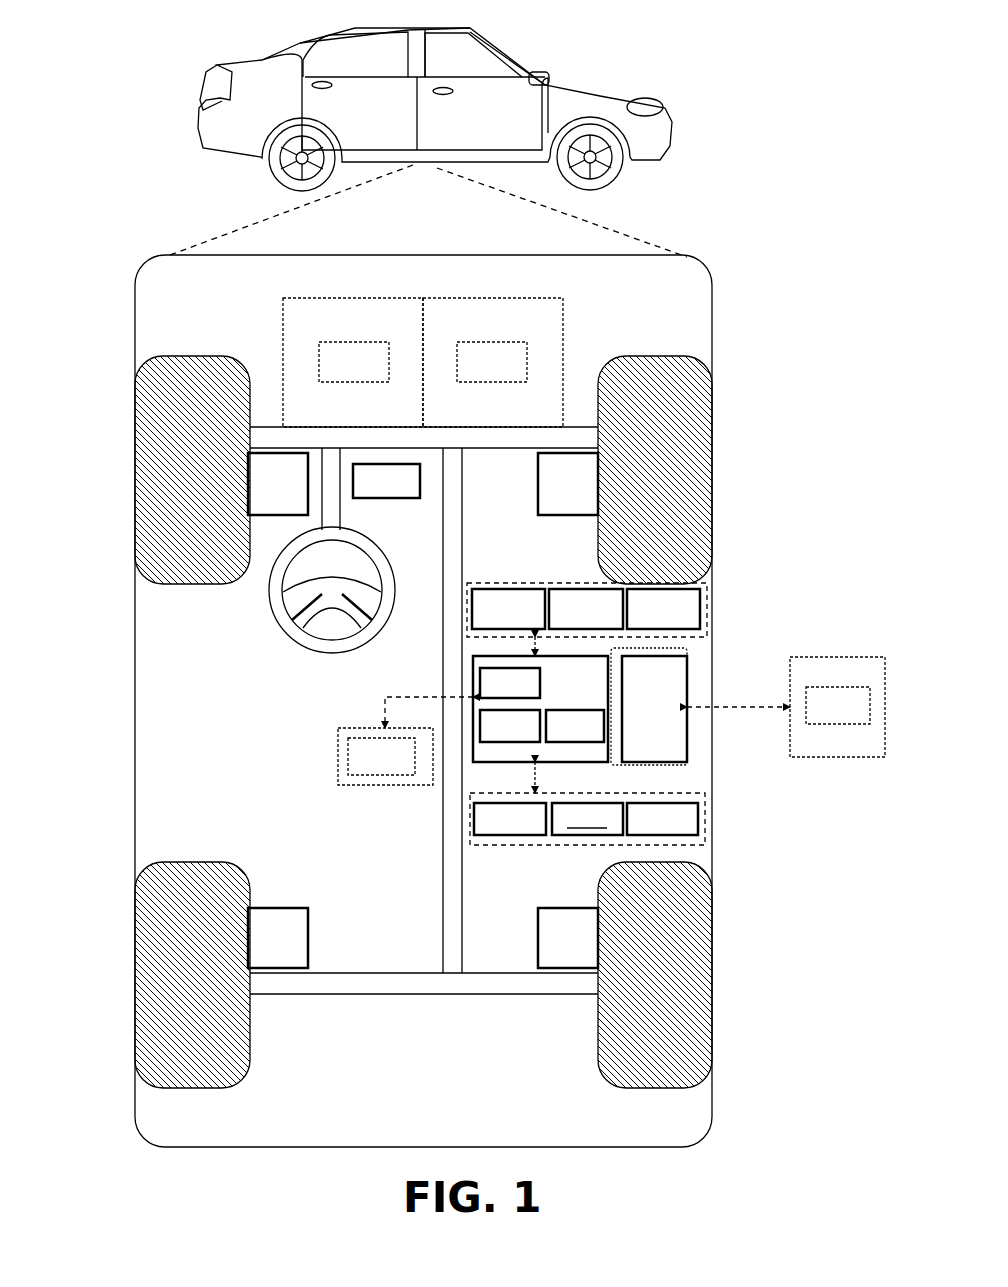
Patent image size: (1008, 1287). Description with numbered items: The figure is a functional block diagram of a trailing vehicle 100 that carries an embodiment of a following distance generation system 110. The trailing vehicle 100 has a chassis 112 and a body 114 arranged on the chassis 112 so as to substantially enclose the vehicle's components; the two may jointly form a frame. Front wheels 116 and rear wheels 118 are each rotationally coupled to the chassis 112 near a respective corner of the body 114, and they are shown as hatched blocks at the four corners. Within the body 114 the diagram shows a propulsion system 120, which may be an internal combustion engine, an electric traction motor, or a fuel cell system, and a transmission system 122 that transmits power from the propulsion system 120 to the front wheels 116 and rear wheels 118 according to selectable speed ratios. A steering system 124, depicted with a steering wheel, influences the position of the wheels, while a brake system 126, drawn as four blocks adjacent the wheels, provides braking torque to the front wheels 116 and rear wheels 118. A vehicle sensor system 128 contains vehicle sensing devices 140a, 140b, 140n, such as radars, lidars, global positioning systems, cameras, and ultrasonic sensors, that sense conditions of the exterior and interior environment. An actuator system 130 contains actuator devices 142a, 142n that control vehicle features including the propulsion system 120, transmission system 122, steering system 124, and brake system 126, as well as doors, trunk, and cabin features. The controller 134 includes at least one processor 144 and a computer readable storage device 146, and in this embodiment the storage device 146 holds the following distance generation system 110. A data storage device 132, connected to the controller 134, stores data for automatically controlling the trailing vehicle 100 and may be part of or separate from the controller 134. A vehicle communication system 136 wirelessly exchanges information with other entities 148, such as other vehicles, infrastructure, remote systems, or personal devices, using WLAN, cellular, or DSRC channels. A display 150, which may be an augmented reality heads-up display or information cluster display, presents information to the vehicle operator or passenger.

The trailing vehicle 100 is at (208, 97).
The following distance generation system 110 is at (494, 692).
The chassis 112 is at (443, 832).
The body 114 is at (135, 668).
The front wheels 116 is at (190, 357).
The rear wheels 118 is at (192, 1085).
The propulsion system 120 is at (338, 371).
The transmission system 122 is at (476, 371).
The steering system 124 is at (350, 509).
The brake system 126 is at (262, 493).
The vehicle sensor system 128 is at (587, 587).
The actuator system 130 is at (587, 840).
The data storage device 132 is at (365, 765).
The controller 134 is at (540, 715).
The vehicle communication system 136 is at (638, 715).
The vehicle sensing device 140a is at (529, 618).
The vehicle sensing device 140b is at (565, 618).
The vehicle sensing device 140n is at (642, 618).
The actuator device 142a is at (490, 828).
The actuator device 142n is at (642, 828).
The processor 144 is at (494, 735).
The computer readable storage device 146 is at (559, 735).
The other entities 148 is at (822, 714).
The display 150 is at (370, 490).